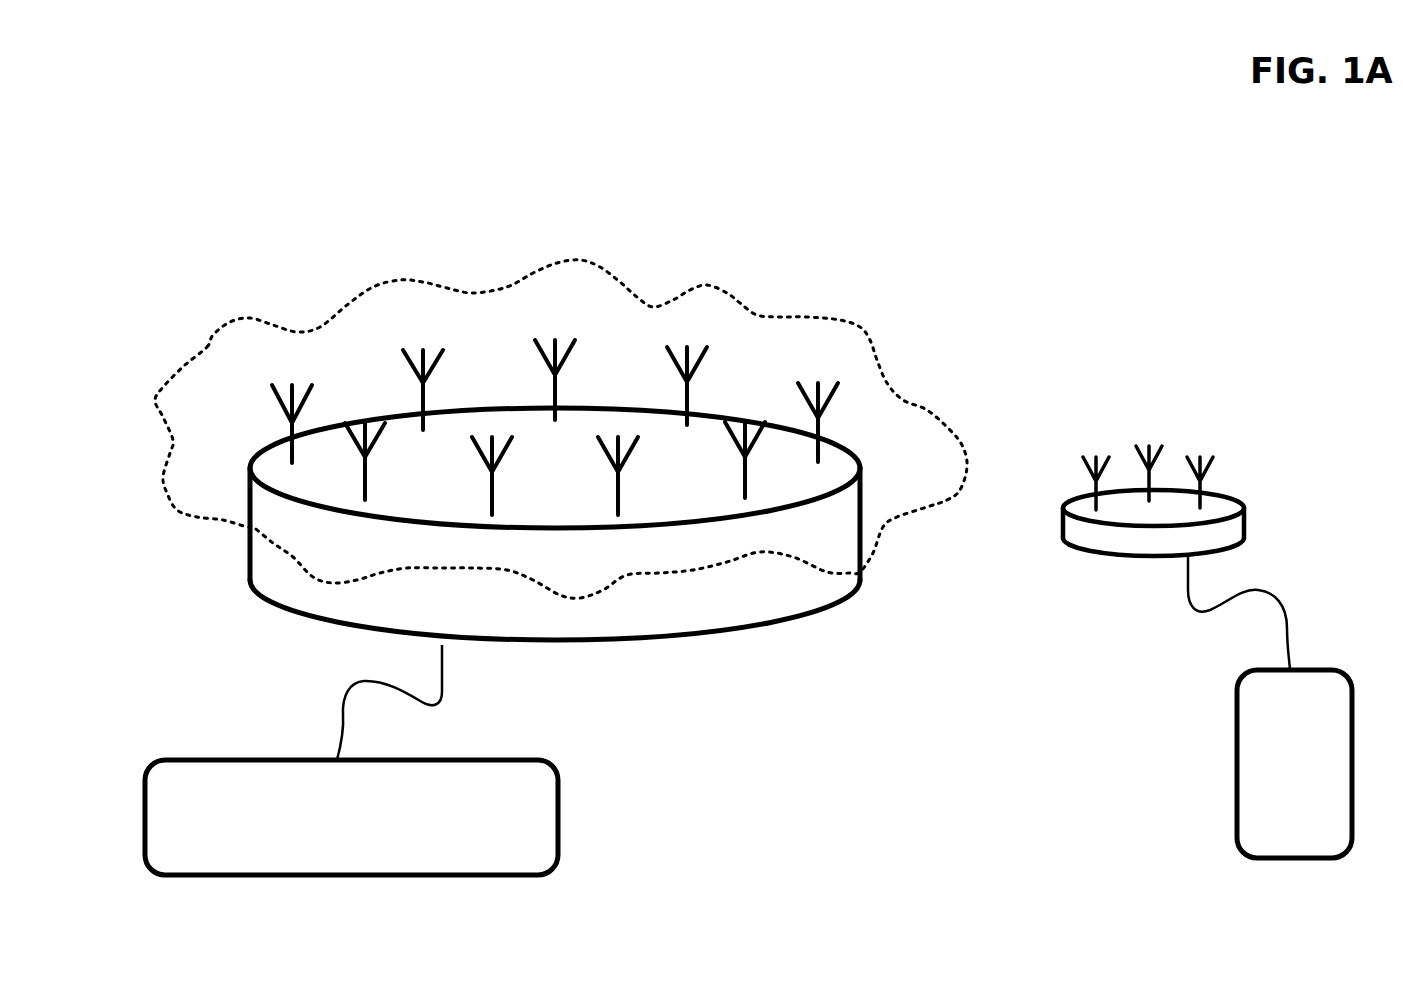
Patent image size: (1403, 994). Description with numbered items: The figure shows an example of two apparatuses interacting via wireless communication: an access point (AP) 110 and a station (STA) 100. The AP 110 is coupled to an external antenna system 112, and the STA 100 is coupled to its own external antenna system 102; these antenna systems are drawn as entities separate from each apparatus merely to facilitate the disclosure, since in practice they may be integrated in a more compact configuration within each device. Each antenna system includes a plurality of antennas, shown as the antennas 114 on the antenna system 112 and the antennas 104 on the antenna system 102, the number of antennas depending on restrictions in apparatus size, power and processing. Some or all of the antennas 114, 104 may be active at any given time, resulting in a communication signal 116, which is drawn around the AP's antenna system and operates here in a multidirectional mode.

The station (STA) 100 is at (1237, 713).
The external antenna system 102 is at (1063, 536).
The antennas 104 is at (1208, 489).
The access point (AP) 110 is at (145, 795).
The external antenna system 112 is at (249, 568).
The antennas 114 is at (823, 433).
The communication signal 116 is at (207, 347).